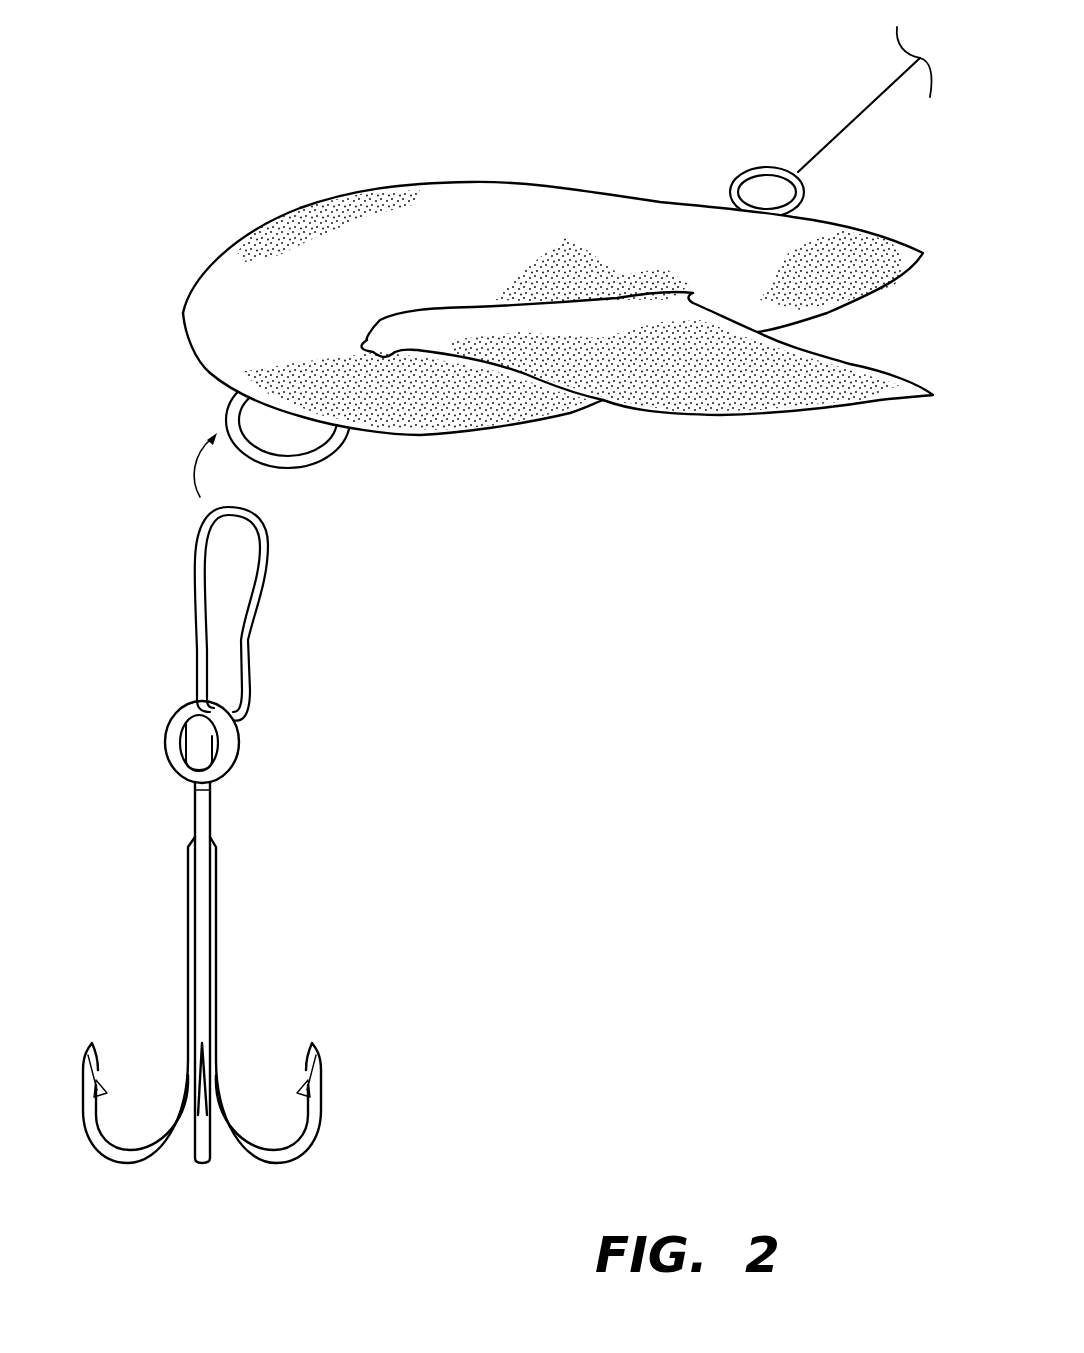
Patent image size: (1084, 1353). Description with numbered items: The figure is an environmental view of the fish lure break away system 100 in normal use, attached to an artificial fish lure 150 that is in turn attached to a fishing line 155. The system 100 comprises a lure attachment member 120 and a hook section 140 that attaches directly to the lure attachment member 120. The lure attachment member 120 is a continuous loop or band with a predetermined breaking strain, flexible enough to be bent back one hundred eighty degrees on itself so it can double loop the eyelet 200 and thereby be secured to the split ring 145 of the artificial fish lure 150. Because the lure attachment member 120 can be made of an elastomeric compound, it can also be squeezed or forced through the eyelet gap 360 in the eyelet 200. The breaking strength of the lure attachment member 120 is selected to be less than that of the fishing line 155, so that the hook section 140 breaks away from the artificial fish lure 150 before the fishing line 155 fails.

The fish lure break away system 100 is at (523, 492).
The lure attachment member 120 is at (257, 608).
The hook section 140 is at (370, 687).
The split ring 145 is at (313, 463).
The artificial fish lure 150 is at (287, 213).
The fishing line 155 is at (847, 110).
The eyelet 200 is at (238, 765).
The eyelet gap 360 is at (180, 798).